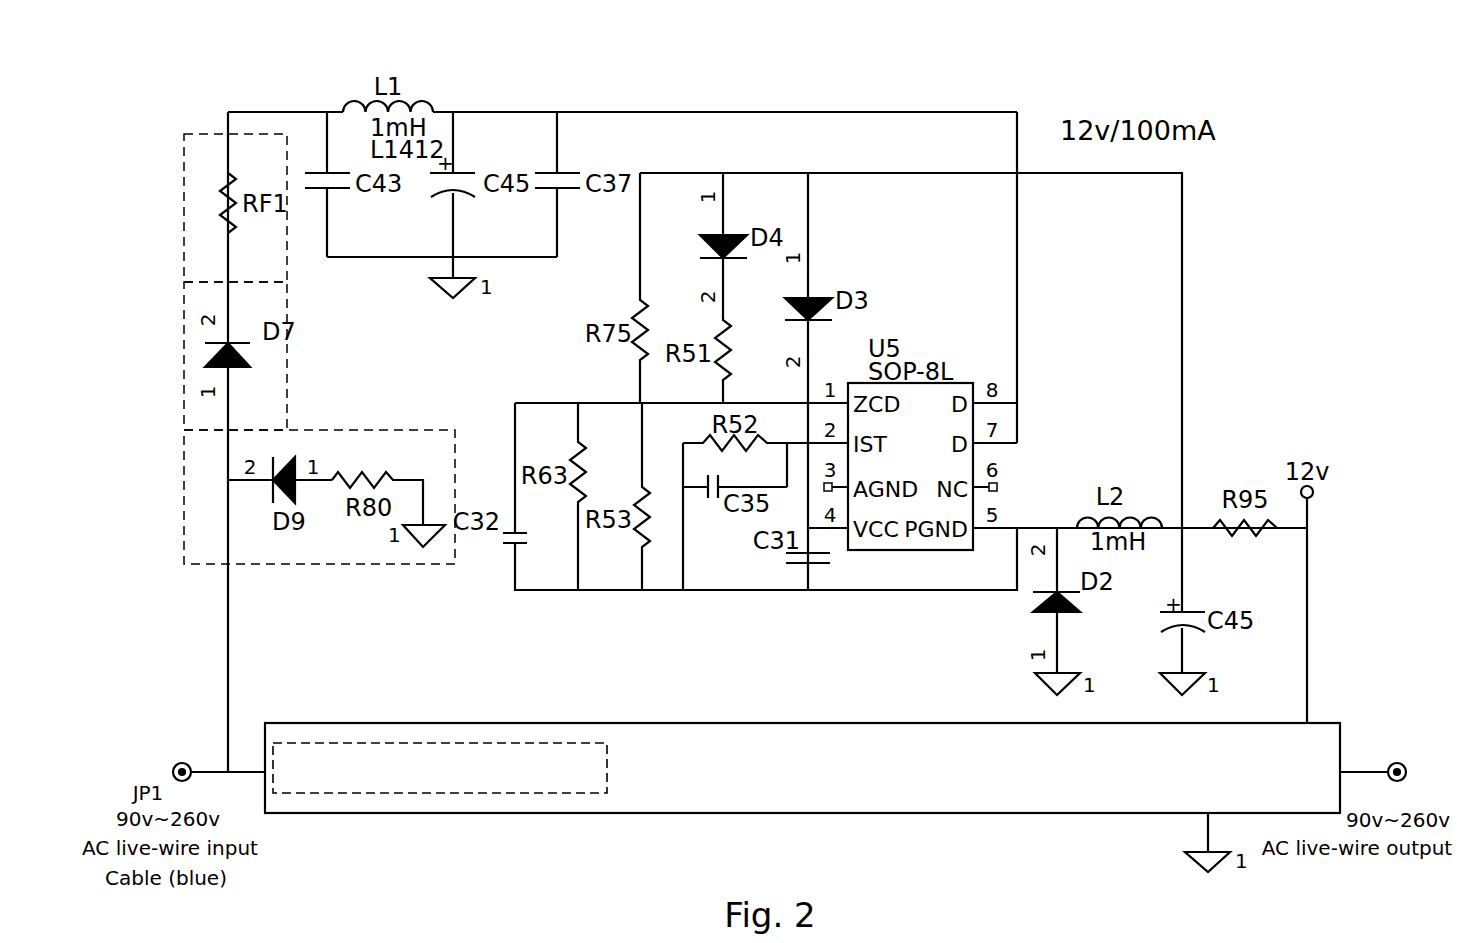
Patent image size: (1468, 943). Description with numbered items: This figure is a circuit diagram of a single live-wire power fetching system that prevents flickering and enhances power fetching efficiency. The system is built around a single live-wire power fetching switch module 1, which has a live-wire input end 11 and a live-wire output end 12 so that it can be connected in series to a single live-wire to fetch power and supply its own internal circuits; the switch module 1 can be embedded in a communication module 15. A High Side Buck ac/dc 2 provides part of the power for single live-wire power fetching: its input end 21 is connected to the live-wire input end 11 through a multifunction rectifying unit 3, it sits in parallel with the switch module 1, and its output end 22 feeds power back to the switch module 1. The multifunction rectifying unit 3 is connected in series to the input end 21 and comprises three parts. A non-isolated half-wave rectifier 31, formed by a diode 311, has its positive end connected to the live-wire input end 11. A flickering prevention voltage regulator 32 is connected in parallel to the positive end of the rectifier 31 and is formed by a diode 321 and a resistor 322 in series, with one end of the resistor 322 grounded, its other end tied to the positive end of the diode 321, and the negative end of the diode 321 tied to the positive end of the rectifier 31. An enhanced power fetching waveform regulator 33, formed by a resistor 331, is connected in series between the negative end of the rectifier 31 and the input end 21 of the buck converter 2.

The single live-wire power fetching switch module 1 is at (995, 815).
The High Side Buck ac/dc 2 is at (1207, 295).
The multifunction rectifying unit 3 is at (270, 342).
The live-wire input end 11 is at (208, 768).
The live-wire output end 12 is at (1372, 768).
The communication module 15 is at (437, 795).
The input end of the High Side Buck ac/dc 21 is at (272, 112).
The output end of the High Side Buck ac/dc 22 is at (1310, 626).
The non-isolated half-wave rectifier 31 is at (184, 392).
The flickering prevention voltage regulator 32 is at (184, 515).
The enhanced power fetching waveform regulator 33 is at (184, 255).
The diode 311 is at (207, 352).
The diode 321 is at (283, 465).
The resistor 322 is at (365, 478).
The resistor 331 is at (228, 173).